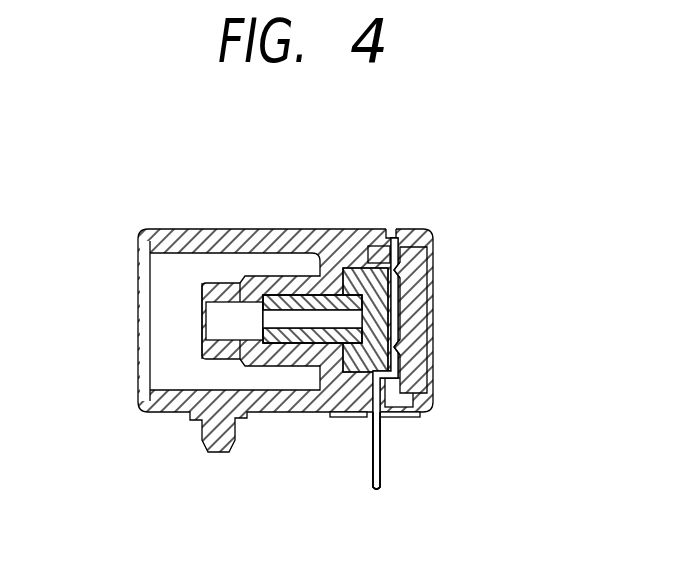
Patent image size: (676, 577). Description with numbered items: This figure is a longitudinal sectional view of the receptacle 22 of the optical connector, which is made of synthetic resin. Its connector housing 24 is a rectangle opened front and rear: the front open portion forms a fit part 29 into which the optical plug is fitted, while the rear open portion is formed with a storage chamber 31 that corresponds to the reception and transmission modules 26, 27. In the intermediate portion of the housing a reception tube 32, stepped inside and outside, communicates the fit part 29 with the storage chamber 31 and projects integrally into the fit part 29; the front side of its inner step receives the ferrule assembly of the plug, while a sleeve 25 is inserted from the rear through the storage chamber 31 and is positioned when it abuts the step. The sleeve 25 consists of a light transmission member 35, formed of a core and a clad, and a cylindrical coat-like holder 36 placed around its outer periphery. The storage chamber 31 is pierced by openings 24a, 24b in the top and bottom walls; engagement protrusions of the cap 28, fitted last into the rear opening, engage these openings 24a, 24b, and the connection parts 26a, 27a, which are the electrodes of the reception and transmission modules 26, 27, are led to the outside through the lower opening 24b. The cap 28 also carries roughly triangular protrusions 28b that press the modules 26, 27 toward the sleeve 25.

The receptacle 22 is at (170, 222).
The connector housing 24 is at (238, 229).
The opening 24a is at (397, 228).
The opening 24b is at (408, 418).
The sleeve 25 is at (340, 512).
The reception module 26 is at (358, 268).
The transmission module 27 is at (385, 363).
The connection part 26a is at (383, 472).
The connection part 27a is at (376, 450).
The cap 28 is at (423, 275).
The protrusion 28b is at (400, 294).
The fit part 29 is at (183, 312).
The storage chamber 31 is at (380, 247).
The reception tube 32 is at (207, 346).
The light transmission member 35 is at (348, 318).
The holder 36 is at (297, 342).